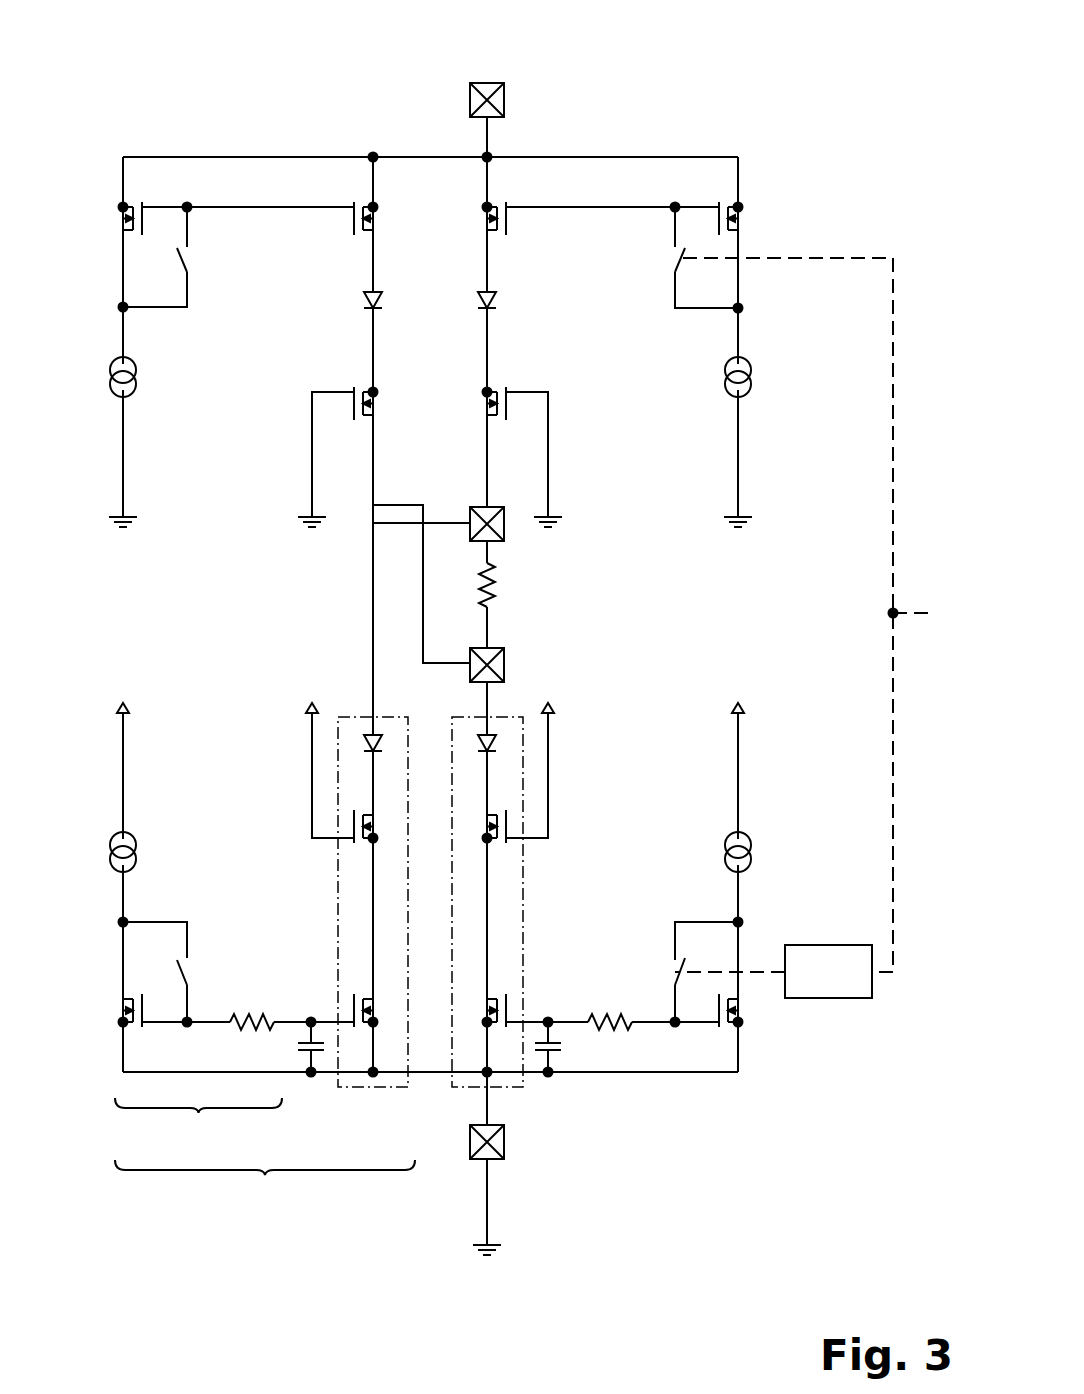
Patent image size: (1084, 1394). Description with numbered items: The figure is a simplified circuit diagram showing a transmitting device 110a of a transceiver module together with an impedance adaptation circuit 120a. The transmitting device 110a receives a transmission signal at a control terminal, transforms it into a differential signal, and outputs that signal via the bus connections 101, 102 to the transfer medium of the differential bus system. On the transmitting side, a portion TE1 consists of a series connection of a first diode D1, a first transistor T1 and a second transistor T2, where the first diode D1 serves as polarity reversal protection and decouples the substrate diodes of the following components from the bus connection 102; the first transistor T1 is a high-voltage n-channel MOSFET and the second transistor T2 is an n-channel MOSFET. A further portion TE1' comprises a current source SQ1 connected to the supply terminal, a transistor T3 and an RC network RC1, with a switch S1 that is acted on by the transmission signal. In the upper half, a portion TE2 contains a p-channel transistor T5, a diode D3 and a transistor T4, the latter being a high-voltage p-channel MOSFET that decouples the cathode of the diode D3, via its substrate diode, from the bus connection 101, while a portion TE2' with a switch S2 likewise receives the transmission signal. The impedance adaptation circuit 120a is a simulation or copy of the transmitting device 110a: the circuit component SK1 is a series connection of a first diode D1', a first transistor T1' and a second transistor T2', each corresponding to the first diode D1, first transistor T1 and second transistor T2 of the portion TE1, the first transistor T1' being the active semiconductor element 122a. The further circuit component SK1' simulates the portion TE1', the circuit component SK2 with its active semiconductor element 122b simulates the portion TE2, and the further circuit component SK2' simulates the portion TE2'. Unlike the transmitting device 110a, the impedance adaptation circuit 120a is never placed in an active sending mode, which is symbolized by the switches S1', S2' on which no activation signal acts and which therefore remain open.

The transmitting device 110a is at (832, 93).
The further circuit component SK2' is at (212, 287).
The portion of transmitting device TE2' is at (749, 310).
The transistor T5 is at (470, 190).
The diode D3 is at (482, 288).
The portion of transmitting device TE2 is at (565, 322).
The switch S2' is at (210, 257).
The circuit component SK2 is at (350, 446).
The active semiconductor element 122b is at (357, 328).
The switch S2 is at (734, 261).
The transistor T4 is at (521, 378).
The bus connection 101 is at (505, 536).
The bus connection 102 is at (505, 665).
The first diode D1' is at (346, 697).
The first diode D1 is at (446, 713).
The first transistor T1 is at (548, 803).
The circuit component SK1 is at (330, 900).
The portion of transmitting device TE1 is at (532, 900).
The first transistor T1' is at (334, 879).
The active semiconductor element 122a is at (364, 938).
The switch S1' is at (184, 954).
The RC network RC1 is at (600, 994).
The transistor T3 is at (745, 962).
The current source SQ1 is at (756, 831).
The second transistor T2' is at (334, 1065).
The second transistor T2 is at (462, 1065).
The switch S1 is at (706, 1024).
The portion of transmitting device TE1' is at (687, 962).
The further circuit component SK1' is at (232, 930).
The impedance adaptation circuit 120a is at (265, 1184).